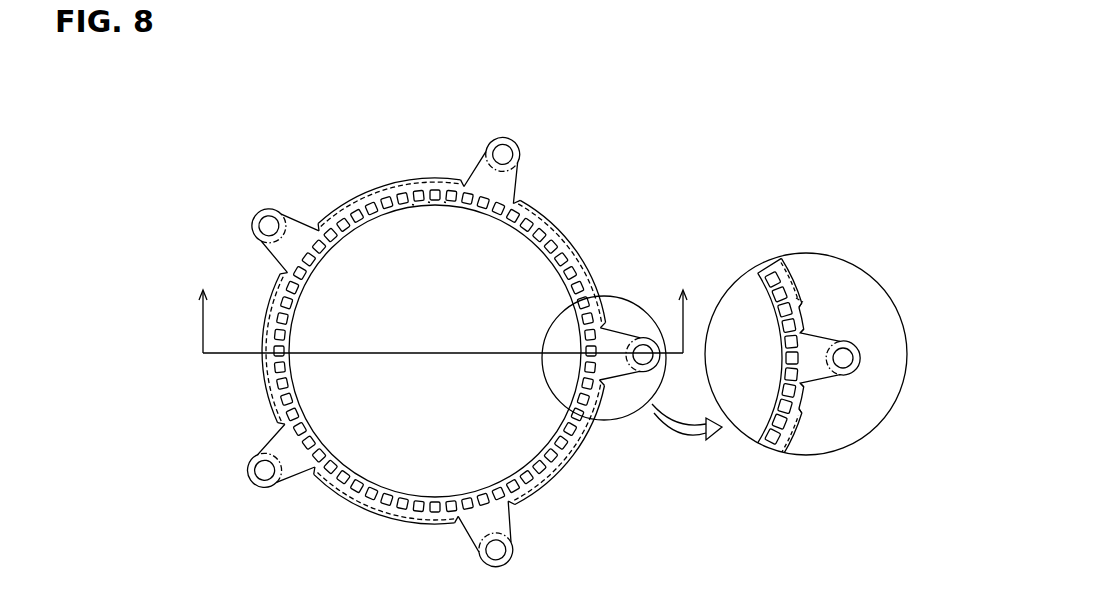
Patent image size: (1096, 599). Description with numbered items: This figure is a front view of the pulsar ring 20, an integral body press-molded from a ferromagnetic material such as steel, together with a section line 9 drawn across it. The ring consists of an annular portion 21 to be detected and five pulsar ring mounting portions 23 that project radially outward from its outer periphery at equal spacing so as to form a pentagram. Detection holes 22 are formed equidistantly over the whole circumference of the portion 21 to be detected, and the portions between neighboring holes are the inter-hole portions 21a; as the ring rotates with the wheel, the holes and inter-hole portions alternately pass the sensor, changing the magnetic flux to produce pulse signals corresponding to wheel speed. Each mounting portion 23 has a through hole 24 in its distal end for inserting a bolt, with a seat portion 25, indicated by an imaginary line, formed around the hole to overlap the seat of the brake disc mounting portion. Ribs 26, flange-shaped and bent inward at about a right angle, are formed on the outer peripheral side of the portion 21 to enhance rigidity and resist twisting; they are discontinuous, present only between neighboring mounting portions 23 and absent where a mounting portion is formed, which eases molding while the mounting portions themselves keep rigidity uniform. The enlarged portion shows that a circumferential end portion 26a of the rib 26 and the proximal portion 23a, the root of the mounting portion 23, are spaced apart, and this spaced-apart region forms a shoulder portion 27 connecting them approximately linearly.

The section line IX-IX 9 is at (443, 310).
The pulsar ring 20 is at (344, 188).
The portion to be detected 21 is at (341, 230).
The inter-hole portion 21a is at (452, 204).
The detection hole 22 is at (387, 205).
The pulsar ring mounting portion 23 is at (521, 172).
The proximal portion 23a is at (463, 183).
The through hole 24 is at (506, 152).
The seat portion 25 is at (487, 148).
The rib 26 is at (370, 183).
The circumferential end portion 26a is at (816, 303).
The shoulder portion 27 is at (810, 312).